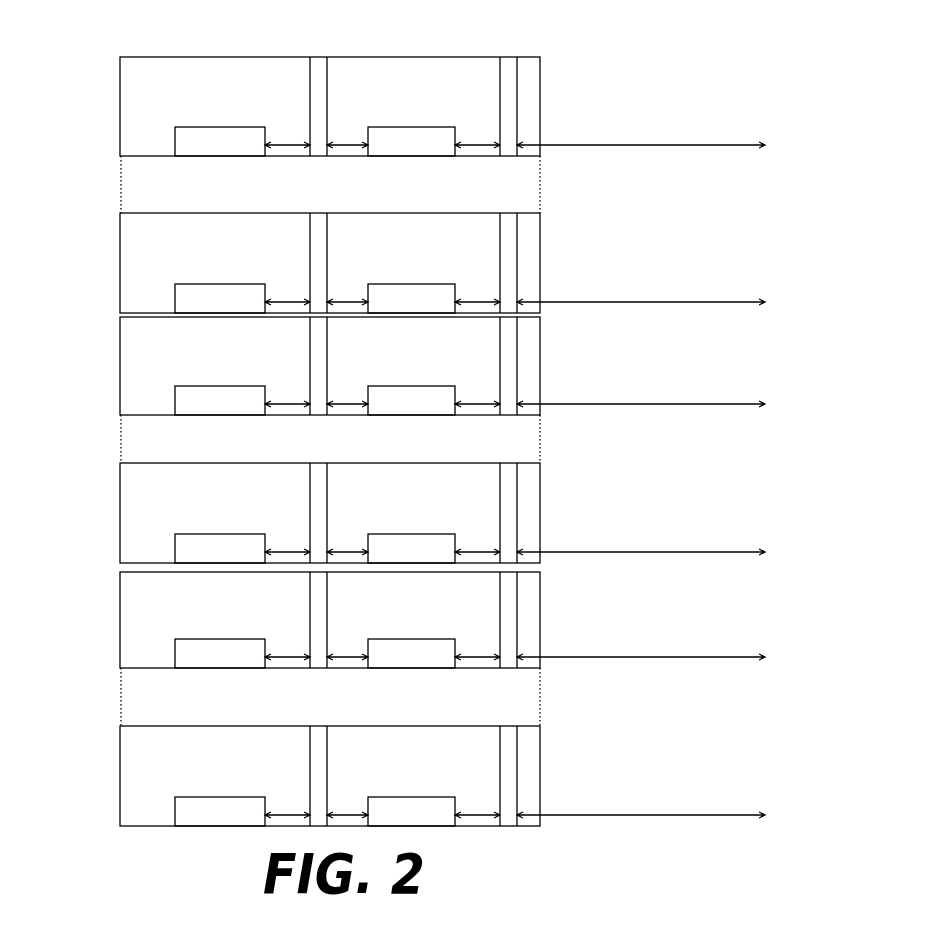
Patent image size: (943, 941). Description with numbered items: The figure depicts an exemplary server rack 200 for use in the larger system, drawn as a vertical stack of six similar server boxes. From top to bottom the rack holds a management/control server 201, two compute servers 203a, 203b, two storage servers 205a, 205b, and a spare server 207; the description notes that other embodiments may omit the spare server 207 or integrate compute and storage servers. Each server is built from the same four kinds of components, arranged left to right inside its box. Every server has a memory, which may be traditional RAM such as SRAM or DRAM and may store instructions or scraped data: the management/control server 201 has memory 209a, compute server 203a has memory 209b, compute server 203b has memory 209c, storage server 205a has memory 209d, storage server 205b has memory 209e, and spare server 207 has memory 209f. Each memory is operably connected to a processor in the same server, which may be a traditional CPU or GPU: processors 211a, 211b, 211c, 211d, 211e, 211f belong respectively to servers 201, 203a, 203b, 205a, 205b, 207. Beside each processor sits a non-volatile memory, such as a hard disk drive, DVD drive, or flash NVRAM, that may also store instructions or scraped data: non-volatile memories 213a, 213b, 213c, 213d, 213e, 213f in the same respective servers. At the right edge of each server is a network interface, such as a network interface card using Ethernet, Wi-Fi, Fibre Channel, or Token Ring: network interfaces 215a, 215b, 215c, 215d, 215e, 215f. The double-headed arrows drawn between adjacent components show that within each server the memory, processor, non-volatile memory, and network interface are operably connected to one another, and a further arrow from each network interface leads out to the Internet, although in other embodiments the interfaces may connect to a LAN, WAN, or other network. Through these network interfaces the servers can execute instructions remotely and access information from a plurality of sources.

The server rack 200 is at (346, 37).
The management/control server 201 is at (145, 132).
The compute server 203a is at (150, 290).
The compute server 203b is at (150, 394).
The storage server 205a is at (150, 549).
The storage server 205b is at (150, 656).
The spare server 207 is at (145, 799).
The memory 209a is at (183, 127).
The memory 209b is at (183, 284).
The memory 209c is at (183, 386).
The memory 209d is at (183, 534).
The memory 209e is at (183, 639).
The memory 209f is at (183, 797).
The processor 211a is at (310, 112).
The processor 211b is at (310, 268).
The processor 211c is at (310, 372).
The processor 211d is at (310, 518).
The processor 211e is at (310, 627).
The processor 211f is at (310, 781).
The non-volatile memory 213a is at (445, 127).
The non-volatile memory 213b is at (445, 284).
The non-volatile memory 213c is at (445, 386).
The non-volatile memory 213d is at (445, 534).
The non-volatile memory 213e is at (445, 639).
The non-volatile memory 213f is at (445, 797).
The network interface 215a is at (508, 95).
The network interface 215b is at (508, 251).
The network interface 215c is at (508, 355).
The network interface 215d is at (508, 501).
The network interface 215e is at (508, 610).
The network interface 215f is at (508, 764).